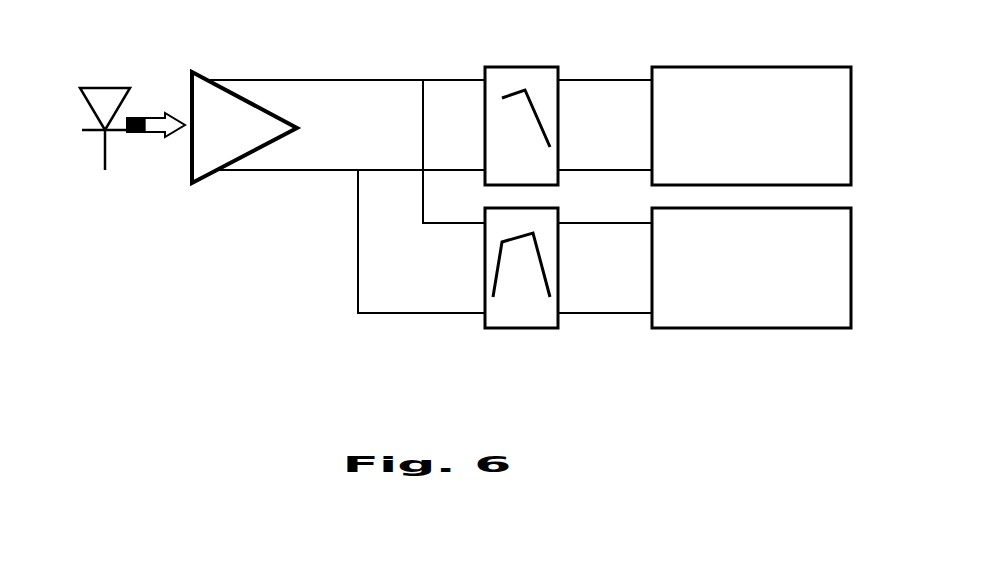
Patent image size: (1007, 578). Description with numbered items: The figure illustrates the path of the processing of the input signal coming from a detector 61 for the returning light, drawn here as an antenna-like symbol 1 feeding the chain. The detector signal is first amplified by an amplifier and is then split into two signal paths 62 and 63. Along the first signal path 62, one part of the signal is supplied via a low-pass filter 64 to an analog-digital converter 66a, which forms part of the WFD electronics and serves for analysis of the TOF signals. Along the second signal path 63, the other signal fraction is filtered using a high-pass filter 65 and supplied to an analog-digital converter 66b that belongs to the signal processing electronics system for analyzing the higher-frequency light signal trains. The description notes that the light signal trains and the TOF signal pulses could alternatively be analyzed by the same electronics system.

The antenna 1 is at (95, 140).
The detector 61 is at (203, 77).
The signal path 62 is at (338, 167).
The signal path 63 is at (457, 230).
The low-pass filter 64 is at (522, 65).
The high-pass filter 65 is at (535, 330).
The analog-digital converter 66a is at (767, 65).
The analog-digital converter 66b is at (793, 332).